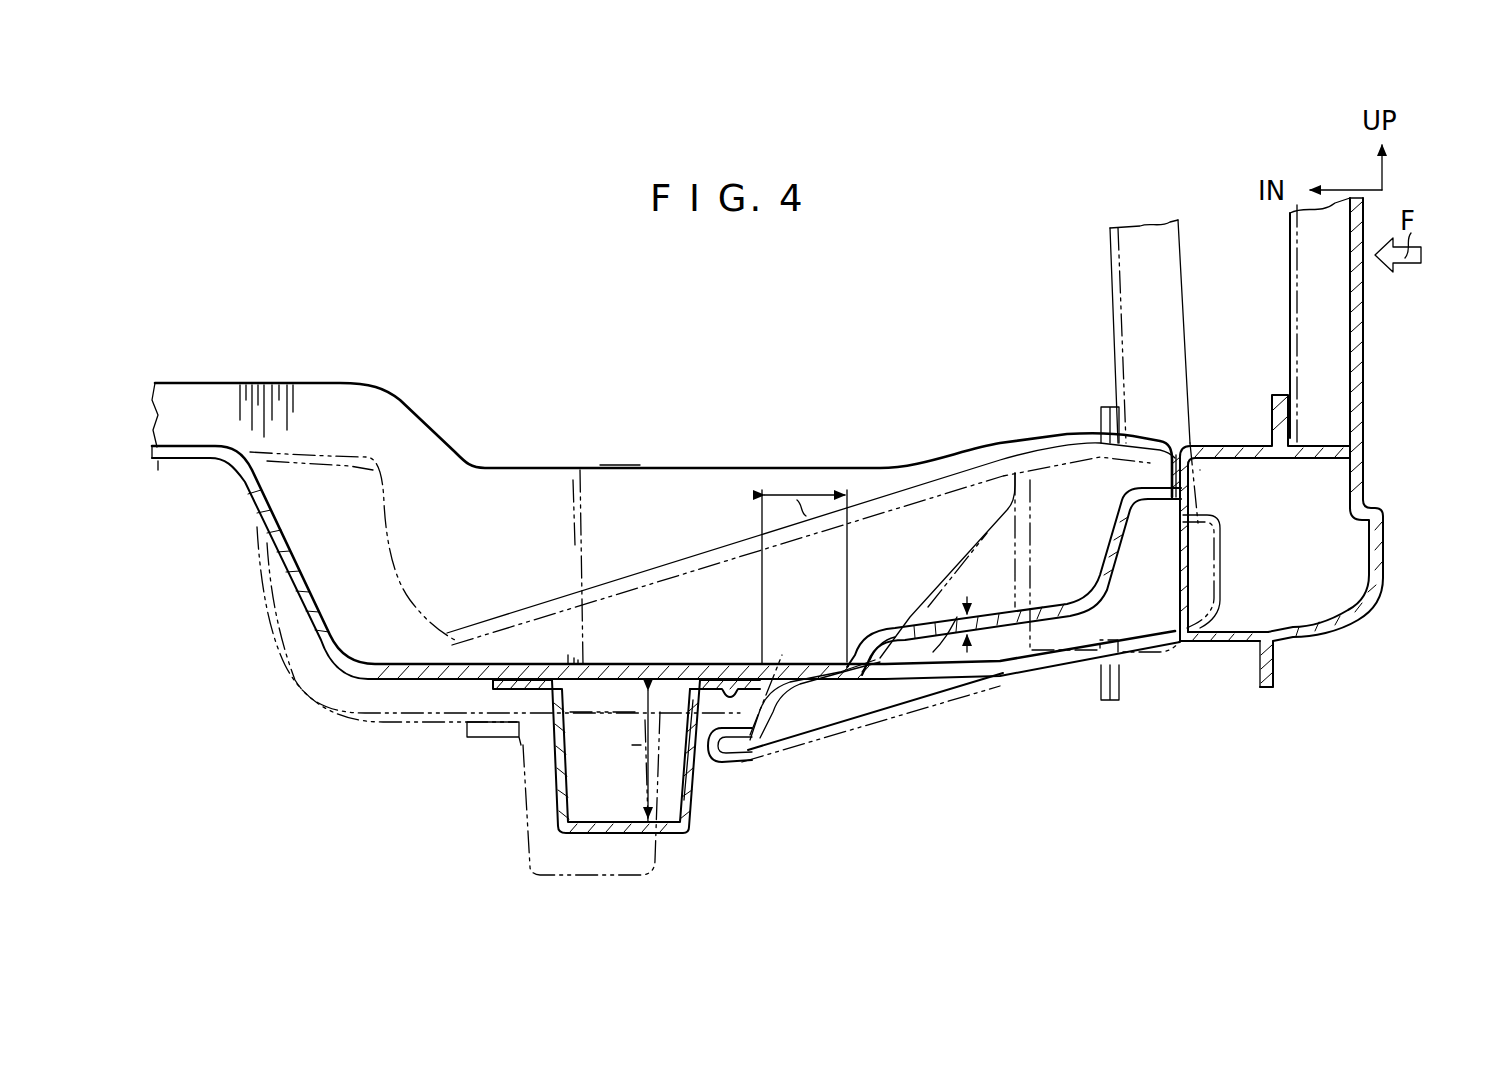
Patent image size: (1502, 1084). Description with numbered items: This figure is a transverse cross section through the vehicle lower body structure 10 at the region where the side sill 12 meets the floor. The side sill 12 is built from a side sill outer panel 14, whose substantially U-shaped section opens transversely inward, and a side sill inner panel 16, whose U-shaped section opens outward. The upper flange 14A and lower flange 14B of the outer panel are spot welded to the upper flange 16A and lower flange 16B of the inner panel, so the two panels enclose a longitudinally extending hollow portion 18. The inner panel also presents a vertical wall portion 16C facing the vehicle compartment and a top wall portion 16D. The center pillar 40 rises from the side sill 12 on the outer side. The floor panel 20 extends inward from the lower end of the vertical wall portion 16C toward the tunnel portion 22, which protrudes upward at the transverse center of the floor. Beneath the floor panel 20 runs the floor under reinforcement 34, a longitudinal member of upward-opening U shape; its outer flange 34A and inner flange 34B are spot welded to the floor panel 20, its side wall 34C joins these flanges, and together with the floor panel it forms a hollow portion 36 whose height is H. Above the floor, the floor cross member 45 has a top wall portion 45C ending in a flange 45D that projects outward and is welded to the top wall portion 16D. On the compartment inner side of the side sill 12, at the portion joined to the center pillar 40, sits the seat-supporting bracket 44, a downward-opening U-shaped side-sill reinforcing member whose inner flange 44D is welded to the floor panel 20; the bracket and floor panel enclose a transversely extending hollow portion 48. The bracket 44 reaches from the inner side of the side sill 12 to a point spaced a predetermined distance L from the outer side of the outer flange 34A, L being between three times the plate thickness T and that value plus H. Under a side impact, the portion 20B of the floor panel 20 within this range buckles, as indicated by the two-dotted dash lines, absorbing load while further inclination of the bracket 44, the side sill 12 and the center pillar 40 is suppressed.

The vehicle body side structure 10 is at (1171, 518).
The side sill 12 is at (1138, 518).
The side sill outer panel 14 is at (1345, 497).
The upper flange 14A is at (1290, 423).
The lower flange 14B is at (1275, 668).
The side sill inner panel 16 is at (1098, 564).
The upper flange 16A is at (1270, 414).
The lower flange 16B is at (1258, 662).
The vertical wall portion 16C is at (1014, 581).
The top wall portion 16D is at (1243, 446).
The hollow portion 18 is at (1296, 560).
The floor panel 20 is at (666, 584).
The portion of the floor panel 20B is at (797, 662).
The tunnel portion 22 is at (205, 443).
The floor under reinforcement 34 is at (607, 772).
The outer flange 34A is at (731, 688).
The inner flange 34B is at (518, 684).
The bracket side wall 34C is at (693, 772).
The hollow portion 36 is at (629, 793).
The center pillar 40 is at (1187, 297).
The seat-supporting bracket 44 is at (944, 647).
The inner flange 44D is at (733, 765).
The floor cross member 45 is at (682, 499).
The top wall portion 45C is at (620, 467).
The flange 45D is at (1212, 441).
The hollow portion 48 is at (988, 662).